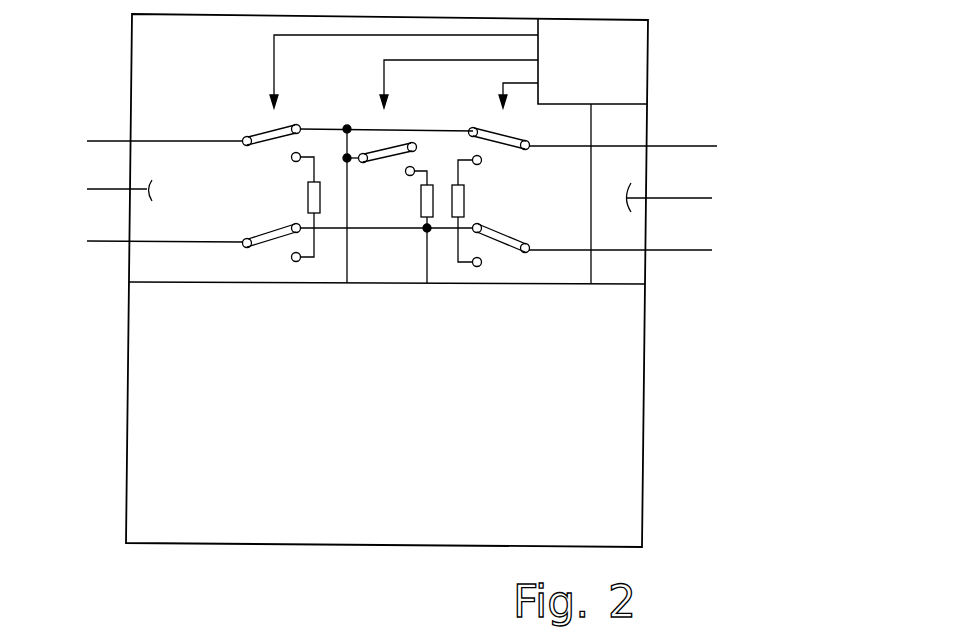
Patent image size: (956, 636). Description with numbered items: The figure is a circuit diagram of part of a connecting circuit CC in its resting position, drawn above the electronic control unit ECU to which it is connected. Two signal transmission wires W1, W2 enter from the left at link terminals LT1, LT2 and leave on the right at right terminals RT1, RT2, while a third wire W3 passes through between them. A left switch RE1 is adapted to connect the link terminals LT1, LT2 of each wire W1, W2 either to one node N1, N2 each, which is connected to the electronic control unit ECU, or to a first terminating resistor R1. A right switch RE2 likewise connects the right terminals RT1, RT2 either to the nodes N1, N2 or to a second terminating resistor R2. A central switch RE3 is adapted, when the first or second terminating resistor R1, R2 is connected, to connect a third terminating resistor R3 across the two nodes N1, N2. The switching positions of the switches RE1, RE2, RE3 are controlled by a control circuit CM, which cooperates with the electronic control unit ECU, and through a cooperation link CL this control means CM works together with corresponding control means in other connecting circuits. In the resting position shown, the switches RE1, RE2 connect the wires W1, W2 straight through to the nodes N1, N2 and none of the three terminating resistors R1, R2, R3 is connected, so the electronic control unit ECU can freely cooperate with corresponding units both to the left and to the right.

The connecting circuit CC is at (185, 50).
The electronic control unit ECU is at (211, 326).
The control circuit CM is at (592, 61).
The cooperation link CL is at (591, 203).
The left switch RE1 is at (378, 73).
The right switch RE2 is at (492, 97).
The central switch RE3 is at (434, 86).
The link terminal LT1 is at (252, 160).
The link terminal LT2 is at (240, 252).
The right terminal RT1 is at (530, 149).
The right terminal RT2 is at (528, 252).
The node N1 is at (343, 135).
The node N2 is at (421, 242).
The first terminating resistor R1 is at (296, 197).
The second terminating resistor R2 is at (478, 201).
The third terminating resistor R3 is at (409, 206).
The signal transmission wire W1 is at (97, 146).
The signal transmission wire W2 is at (104, 251).
The signal transmission wire W3 is at (97, 196).